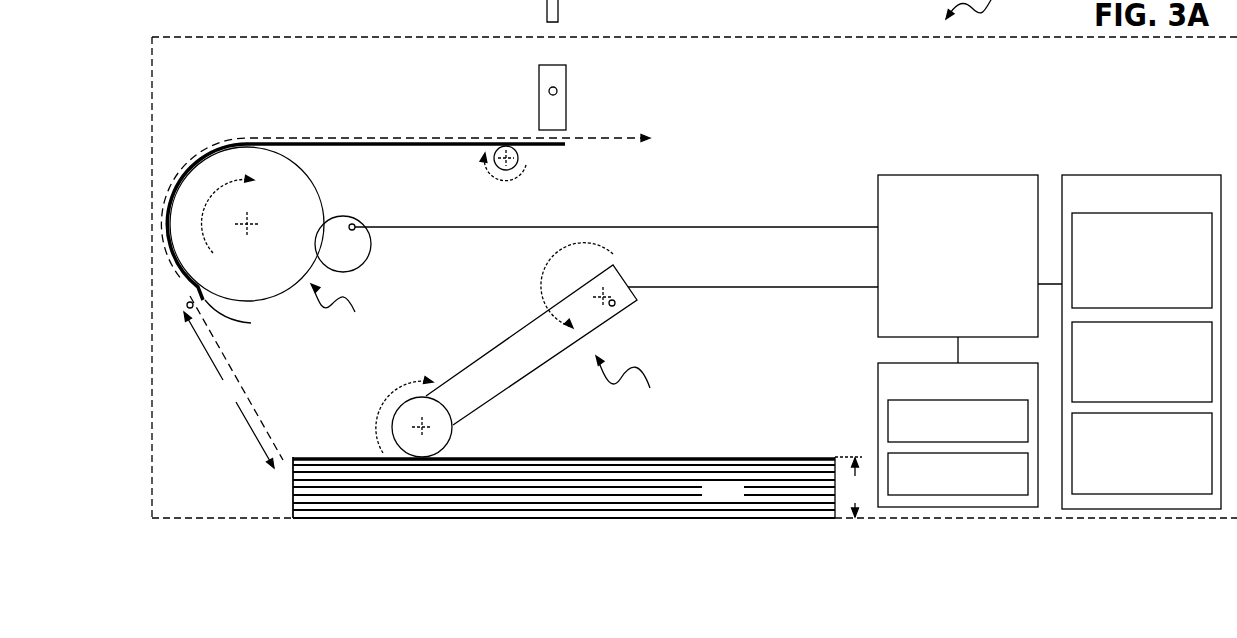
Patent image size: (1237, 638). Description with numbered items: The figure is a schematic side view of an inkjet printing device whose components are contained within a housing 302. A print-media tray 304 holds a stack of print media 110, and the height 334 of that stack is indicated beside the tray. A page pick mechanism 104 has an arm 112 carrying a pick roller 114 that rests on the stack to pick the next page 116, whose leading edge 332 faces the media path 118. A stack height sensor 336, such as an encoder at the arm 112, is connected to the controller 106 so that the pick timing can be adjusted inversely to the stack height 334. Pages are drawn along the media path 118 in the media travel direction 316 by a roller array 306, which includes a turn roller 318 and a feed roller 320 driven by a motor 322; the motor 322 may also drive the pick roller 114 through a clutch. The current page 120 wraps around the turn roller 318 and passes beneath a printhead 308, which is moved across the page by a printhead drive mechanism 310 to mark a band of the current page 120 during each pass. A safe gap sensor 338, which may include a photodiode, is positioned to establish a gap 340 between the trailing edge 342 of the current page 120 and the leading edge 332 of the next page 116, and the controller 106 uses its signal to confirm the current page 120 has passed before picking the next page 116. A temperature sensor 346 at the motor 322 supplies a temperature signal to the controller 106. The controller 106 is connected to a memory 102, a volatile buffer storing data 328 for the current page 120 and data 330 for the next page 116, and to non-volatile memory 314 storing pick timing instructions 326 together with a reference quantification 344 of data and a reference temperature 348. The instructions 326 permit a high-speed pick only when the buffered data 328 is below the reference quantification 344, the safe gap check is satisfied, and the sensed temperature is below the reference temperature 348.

The housing 302 is at (806, 37).
The current page 120 is at (403, 147).
The media travel direction 316 is at (410, 193).
The media path 118 is at (250, 390).
The turn roller 318 is at (312, 183).
The motor 322 is at (345, 216).
The temperature sensor 346 is at (356, 226).
The roller array 306 is at (345, 309).
The trailing edge 342 is at (244, 317).
The safe gap sensor 338 is at (187, 305).
The gap 340 is at (229, 390).
The printhead 308 is at (539, 110).
The printhead drive mechanism 310 is at (549, 91).
The feed roller 320 is at (519, 165).
The arm 112 is at (533, 372).
The page pick mechanism 104 is at (607, 329).
The stack height sensor 336 is at (615, 306).
The pick roller 114 is at (452, 442).
The next page 116 is at (713, 457).
The print media 110 is at (723, 491).
The leading edge 332 is at (294, 455).
The print-media tray 304 is at (831, 521).
The stack height 334 is at (854, 487).
The controller 106 is at (973, 281).
The memory 102 is at (1020, 396).
The data for current page 328 is at (1017, 433).
The data for next page 330 is at (1017, 488).
The non-volatile memory 314 is at (1182, 206).
The pick timing instructions 326 is at (1158, 300).
The reference quantification of data 344 is at (1197, 386).
The reference temperature 348 is at (1188, 480).